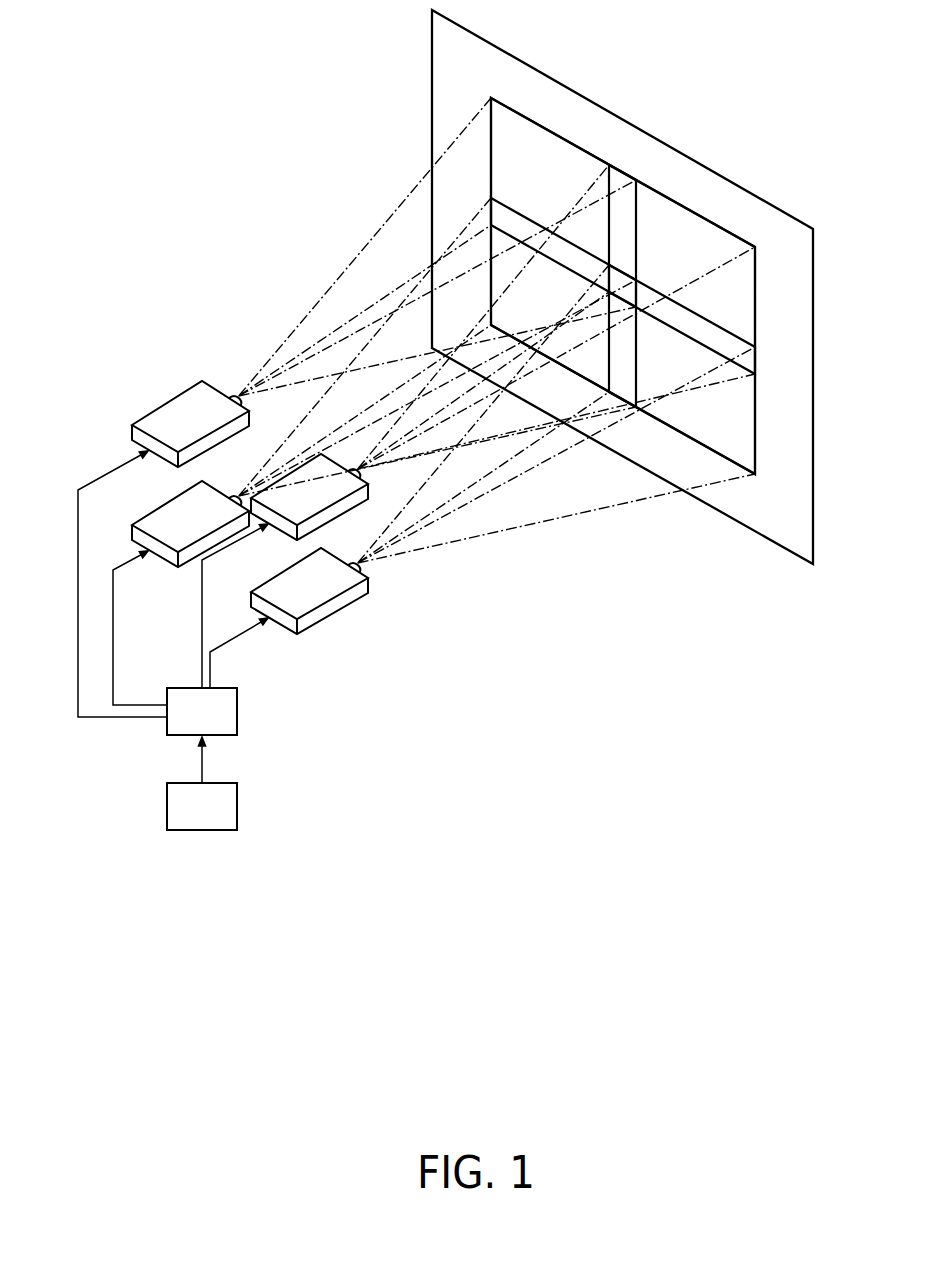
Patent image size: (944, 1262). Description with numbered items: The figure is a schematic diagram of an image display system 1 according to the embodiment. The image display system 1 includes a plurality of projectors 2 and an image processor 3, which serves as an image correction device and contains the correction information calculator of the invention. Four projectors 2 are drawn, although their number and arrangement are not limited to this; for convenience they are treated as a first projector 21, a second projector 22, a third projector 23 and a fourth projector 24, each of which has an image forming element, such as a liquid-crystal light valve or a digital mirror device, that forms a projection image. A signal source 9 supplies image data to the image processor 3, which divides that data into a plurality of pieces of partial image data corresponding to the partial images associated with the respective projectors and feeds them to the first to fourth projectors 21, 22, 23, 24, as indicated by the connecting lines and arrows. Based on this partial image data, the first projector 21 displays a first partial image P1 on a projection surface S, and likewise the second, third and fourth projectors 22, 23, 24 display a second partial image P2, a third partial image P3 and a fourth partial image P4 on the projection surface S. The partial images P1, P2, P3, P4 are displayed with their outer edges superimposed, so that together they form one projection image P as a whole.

The image display system 1 is at (242, 260).
The projectors 2 is at (254, 502).
The first projector 21 is at (190, 415).
The second projector 22 is at (318, 495).
The third projector 23 is at (172, 518).
The fourth projector 24 is at (323, 593).
The image processor 3 is at (237, 710).
The signal source 9 is at (237, 803).
The projection surface S is at (450, 98).
The projection image P is at (643, 208).
The first partial image P1 is at (543, 153).
The second partial image P2 is at (708, 247).
The third partial image P3 is at (508, 275).
The fourth partial image P4 is at (722, 440).